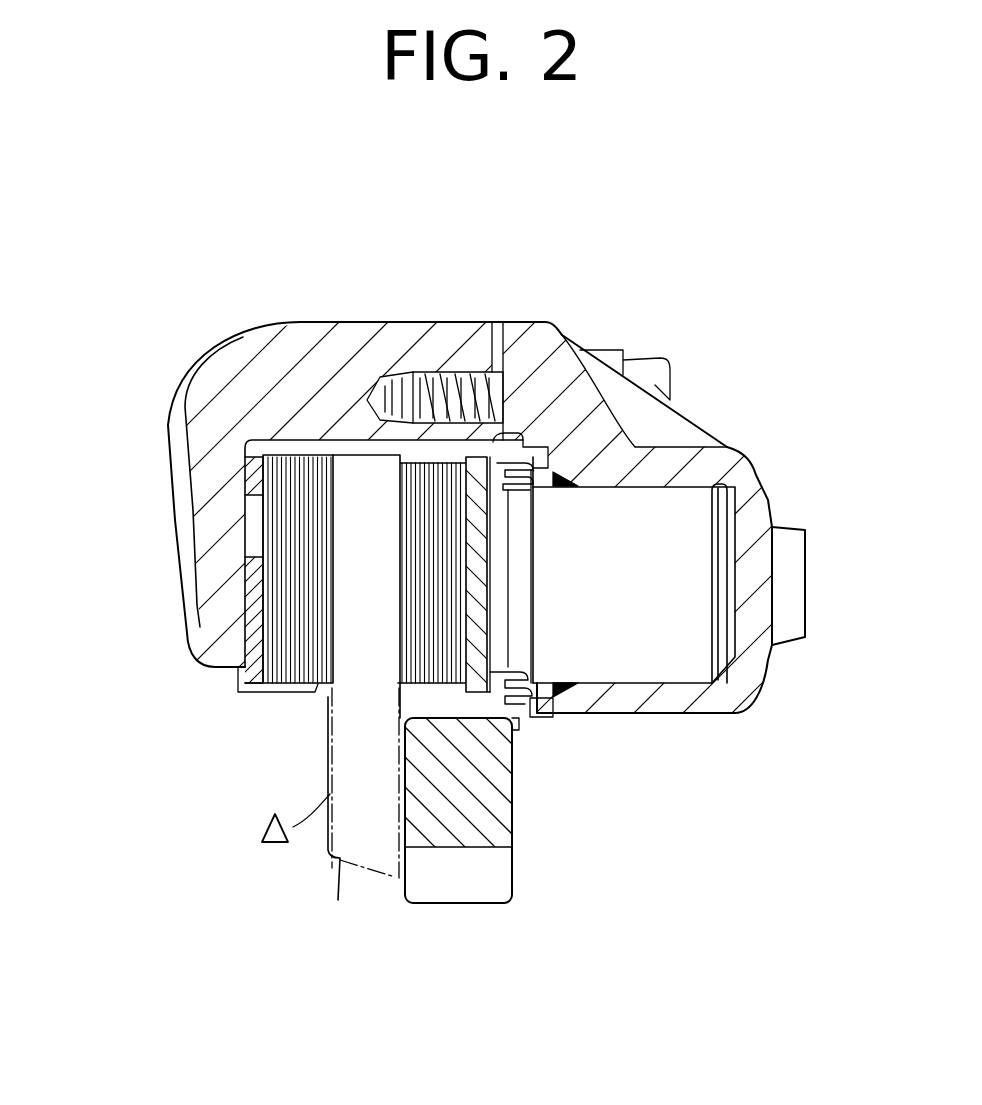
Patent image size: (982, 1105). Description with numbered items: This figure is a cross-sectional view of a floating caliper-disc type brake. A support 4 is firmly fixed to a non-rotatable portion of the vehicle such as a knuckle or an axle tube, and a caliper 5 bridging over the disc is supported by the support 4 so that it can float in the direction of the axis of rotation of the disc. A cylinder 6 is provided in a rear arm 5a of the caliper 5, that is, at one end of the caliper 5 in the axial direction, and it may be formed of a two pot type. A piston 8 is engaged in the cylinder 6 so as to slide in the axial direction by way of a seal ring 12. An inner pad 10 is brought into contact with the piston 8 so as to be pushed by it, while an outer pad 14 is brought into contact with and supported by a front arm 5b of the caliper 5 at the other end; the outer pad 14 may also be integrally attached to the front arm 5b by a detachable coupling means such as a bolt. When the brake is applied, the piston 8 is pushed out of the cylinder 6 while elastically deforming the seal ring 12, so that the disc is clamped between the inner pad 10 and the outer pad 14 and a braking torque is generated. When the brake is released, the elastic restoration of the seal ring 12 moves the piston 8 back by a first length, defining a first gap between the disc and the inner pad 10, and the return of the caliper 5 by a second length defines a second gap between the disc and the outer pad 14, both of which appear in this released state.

The support 4 is at (495, 892).
The caliper 5 is at (412, 308).
The rear arm 5a is at (740, 474).
The front arm 5b is at (213, 562).
The cylinder 6 is at (688, 674).
The piston 8 is at (331, 712).
The inner pad 10 is at (427, 684).
The seal ring 12 is at (575, 690).
The outer pad 14 is at (278, 690).